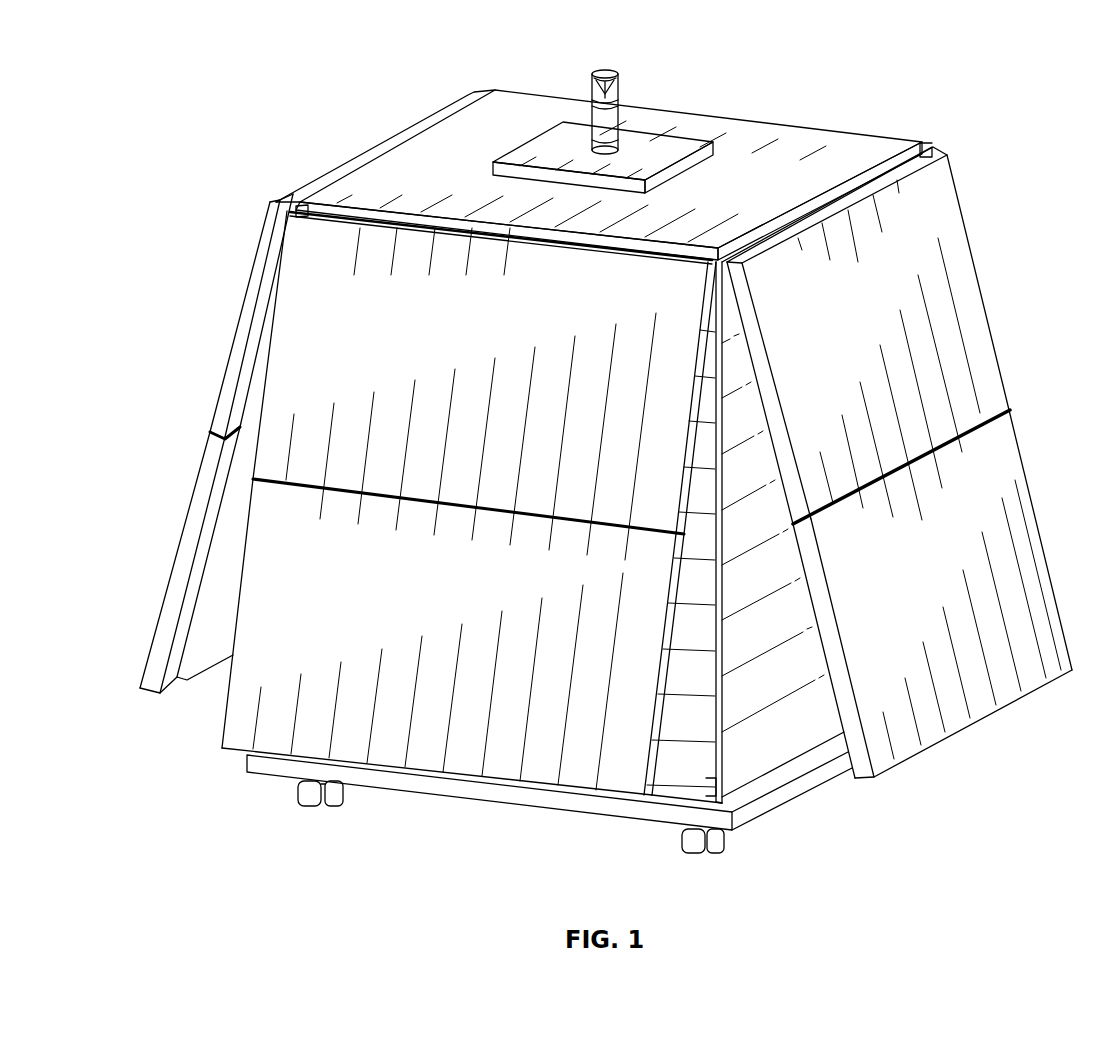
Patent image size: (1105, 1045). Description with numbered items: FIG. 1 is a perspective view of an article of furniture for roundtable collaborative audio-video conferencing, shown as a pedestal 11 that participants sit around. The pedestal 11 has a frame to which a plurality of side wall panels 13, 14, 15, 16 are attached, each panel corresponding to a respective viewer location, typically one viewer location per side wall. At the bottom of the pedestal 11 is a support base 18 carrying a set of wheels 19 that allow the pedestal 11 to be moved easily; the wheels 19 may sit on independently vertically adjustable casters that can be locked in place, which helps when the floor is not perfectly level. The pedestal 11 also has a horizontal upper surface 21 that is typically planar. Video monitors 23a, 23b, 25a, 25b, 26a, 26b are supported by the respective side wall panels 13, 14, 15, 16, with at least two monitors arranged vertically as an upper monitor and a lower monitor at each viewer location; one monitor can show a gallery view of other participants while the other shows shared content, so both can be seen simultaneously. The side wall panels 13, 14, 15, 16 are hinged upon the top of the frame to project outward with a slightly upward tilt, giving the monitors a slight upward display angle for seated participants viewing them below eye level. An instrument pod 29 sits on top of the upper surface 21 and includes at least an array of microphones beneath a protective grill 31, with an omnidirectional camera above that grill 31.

The pedestal 11 is at (964, 96).
The side wall panel 13 is at (895, 162).
The side wall panel 14 is at (728, 118).
The side wall panel 15 is at (417, 122).
The side wall panel 16 is at (310, 205).
The support base 18 is at (483, 793).
The wheels 19 is at (312, 808).
The horizontal upper surface 21 is at (548, 108).
The video monitor 23a is at (960, 272).
The video monitor 23b is at (1003, 470).
The video monitor 25a is at (240, 323).
The video monitor 25b is at (192, 482).
The video monitor 26a is at (290, 265).
The video monitor 26b is at (242, 708).
The instrument pod 29 is at (620, 92).
The protective grill 31 is at (527, 148).